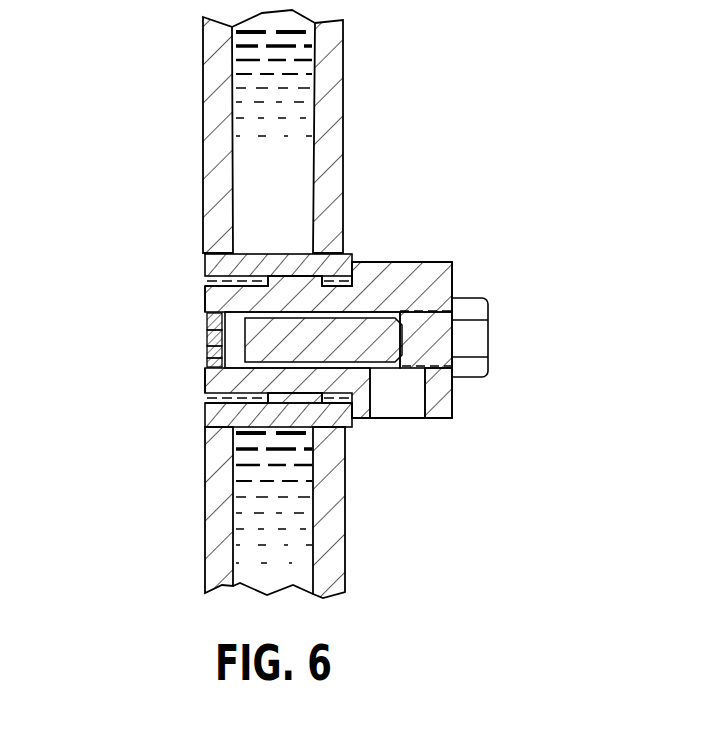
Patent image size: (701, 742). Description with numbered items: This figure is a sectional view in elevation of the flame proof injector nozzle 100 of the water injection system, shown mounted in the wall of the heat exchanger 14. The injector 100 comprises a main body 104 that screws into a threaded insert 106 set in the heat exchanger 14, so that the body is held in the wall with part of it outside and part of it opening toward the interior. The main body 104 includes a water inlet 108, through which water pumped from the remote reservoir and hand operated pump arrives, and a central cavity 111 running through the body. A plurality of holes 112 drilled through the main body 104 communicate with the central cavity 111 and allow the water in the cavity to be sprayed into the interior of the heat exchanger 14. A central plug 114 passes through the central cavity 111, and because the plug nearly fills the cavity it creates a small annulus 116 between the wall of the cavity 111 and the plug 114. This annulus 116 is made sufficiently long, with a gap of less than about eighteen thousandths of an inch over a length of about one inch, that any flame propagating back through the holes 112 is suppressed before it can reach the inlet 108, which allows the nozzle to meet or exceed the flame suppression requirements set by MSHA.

The heat exchanger 14 is at (343, 105).
The flame proof injector nozzle 100 is at (442, 258).
The main body 104 is at (453, 403).
The threaded insert 106 is at (353, 255).
The water inlet 108 is at (422, 415).
The central cavity 111 is at (205, 353).
The holes 112 is at (205, 340).
The central plug 114 is at (488, 323).
The annulus 116 is at (381, 368).